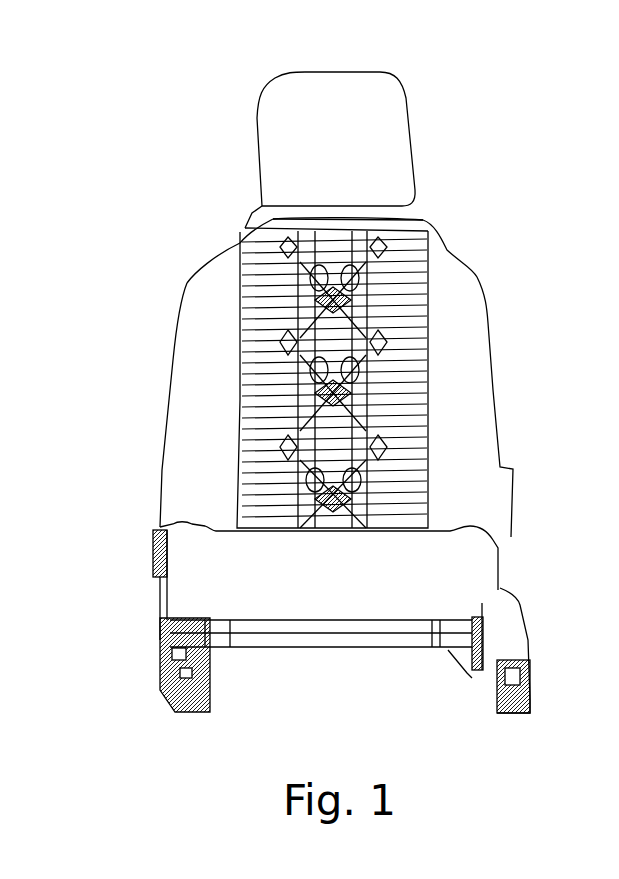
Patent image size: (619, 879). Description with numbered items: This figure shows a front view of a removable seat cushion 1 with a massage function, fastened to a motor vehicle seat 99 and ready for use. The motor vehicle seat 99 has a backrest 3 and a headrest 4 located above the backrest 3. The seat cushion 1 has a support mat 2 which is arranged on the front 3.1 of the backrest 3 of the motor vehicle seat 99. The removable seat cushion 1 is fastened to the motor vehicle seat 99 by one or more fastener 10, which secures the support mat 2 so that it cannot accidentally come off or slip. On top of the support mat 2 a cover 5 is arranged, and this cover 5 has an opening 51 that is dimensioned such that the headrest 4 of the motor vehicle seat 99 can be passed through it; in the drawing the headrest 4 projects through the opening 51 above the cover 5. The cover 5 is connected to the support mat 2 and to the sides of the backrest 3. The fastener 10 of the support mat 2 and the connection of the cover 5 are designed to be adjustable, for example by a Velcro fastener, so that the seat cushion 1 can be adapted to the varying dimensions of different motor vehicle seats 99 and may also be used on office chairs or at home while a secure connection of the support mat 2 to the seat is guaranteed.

The motor vehicle seat 99 is at (304, 364).
The removable seat cushion 1 is at (304, 325).
The support mat 2 is at (403, 375).
The backrest 3 is at (160, 267).
The front of the backrest 3.1 is at (192, 365).
The headrest 4 is at (368, 102).
The cover 5 is at (393, 227).
The opening 51 is at (255, 200).
The fastener 10 is at (247, 230).